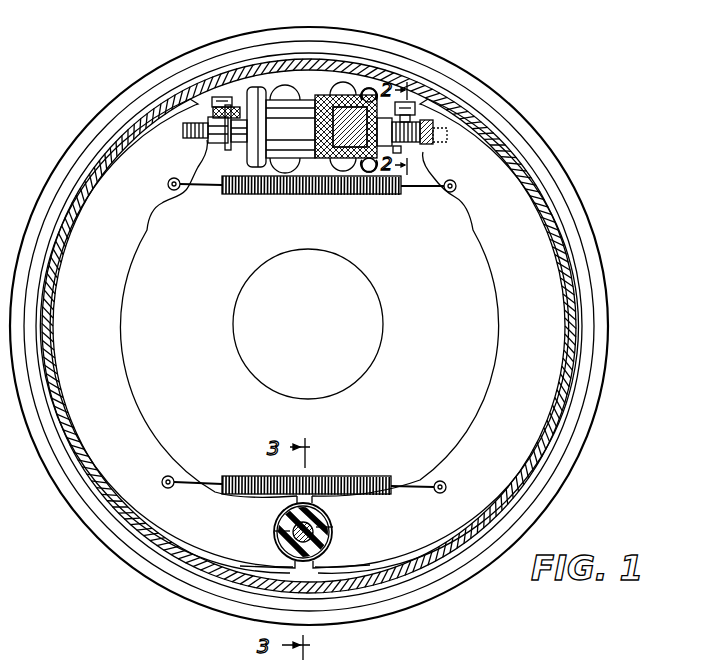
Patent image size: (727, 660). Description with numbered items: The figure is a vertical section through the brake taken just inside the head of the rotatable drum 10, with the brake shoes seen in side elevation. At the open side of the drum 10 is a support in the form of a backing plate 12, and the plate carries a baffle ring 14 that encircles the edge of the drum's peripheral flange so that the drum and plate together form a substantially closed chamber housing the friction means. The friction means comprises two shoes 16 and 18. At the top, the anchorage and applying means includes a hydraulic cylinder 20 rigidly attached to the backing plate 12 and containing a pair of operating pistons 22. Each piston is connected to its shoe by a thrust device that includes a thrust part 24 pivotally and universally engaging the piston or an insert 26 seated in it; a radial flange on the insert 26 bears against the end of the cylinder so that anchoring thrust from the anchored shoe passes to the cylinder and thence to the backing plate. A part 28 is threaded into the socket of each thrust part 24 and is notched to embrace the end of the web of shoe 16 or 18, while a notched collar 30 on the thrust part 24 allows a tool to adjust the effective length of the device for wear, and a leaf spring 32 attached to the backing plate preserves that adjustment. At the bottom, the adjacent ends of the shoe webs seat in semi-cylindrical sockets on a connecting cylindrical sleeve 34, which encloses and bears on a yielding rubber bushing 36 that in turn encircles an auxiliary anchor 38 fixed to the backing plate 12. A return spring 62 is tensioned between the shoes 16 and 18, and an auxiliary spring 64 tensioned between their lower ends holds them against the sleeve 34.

The rotatable drum 10 is at (568, 380).
The backing plate 12 is at (580, 285).
The baffle ring 14 is at (583, 230).
The shoe 16 is at (113, 402).
The shoe 18 is at (495, 413).
The hydraulic cylinder 20 is at (290, 145).
The operating pistons 22 is at (338, 160).
The thrust parts 24 is at (366, 97).
The insert 26 is at (368, 172).
The part 28 is at (428, 122).
The notched collar 30 is at (420, 152).
The leaf spring 32 is at (416, 102).
The connecting cylindrical sleeve 34 is at (322, 540).
The bushing 36 is at (275, 531).
The auxiliary anchor 38 is at (333, 527).
The return spring 62 is at (288, 193).
The auxiliary spring 64 is at (352, 478).